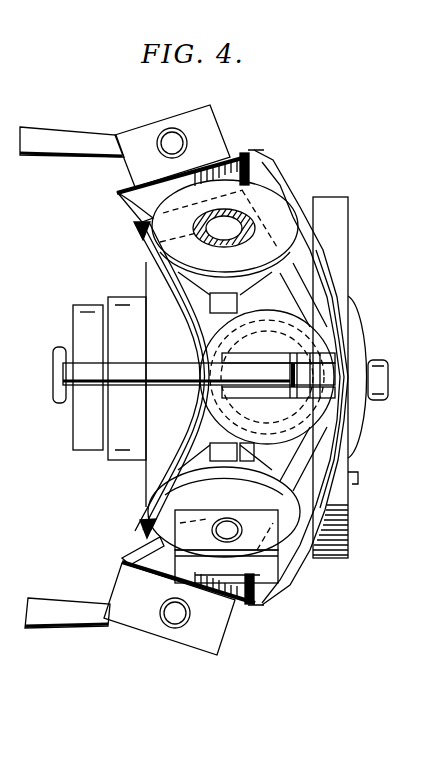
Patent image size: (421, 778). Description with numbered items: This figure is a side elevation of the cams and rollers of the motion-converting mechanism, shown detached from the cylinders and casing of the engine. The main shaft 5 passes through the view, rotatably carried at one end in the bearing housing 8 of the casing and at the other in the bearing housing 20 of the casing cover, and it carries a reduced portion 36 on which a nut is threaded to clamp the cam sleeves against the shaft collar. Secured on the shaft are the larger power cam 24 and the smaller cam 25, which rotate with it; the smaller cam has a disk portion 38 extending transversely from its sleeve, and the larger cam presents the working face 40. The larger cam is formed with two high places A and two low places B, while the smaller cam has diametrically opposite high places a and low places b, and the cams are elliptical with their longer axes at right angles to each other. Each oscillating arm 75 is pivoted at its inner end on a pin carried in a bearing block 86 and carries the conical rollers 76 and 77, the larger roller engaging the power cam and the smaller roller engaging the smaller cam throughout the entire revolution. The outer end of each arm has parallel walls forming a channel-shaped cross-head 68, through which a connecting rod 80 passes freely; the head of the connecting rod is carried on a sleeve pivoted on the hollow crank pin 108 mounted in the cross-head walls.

The main shaft 5 is at (60, 354).
The bearing housing 8 is at (92, 306).
The bearing housing 20 is at (356, 478).
The cam 24 is at (271, 192).
The cam 25 is at (142, 249).
The reduced portion 36 is at (377, 393).
The disk portion 38 is at (152, 287).
The working face 40 is at (263, 173).
The cross-head 68 is at (197, 113).
The oscillating arm 75 is at (240, 240).
The roller 76 is at (117, 194).
The roller 77 is at (212, 292).
The connecting rod 80 is at (60, 130).
The bearing block 86 is at (255, 450).
The hollow crank pin 108 is at (165, 128).
The high place A is at (255, 150).
The low place B is at (340, 372).
The high place a is at (200, 398).
The low place b is at (134, 228).